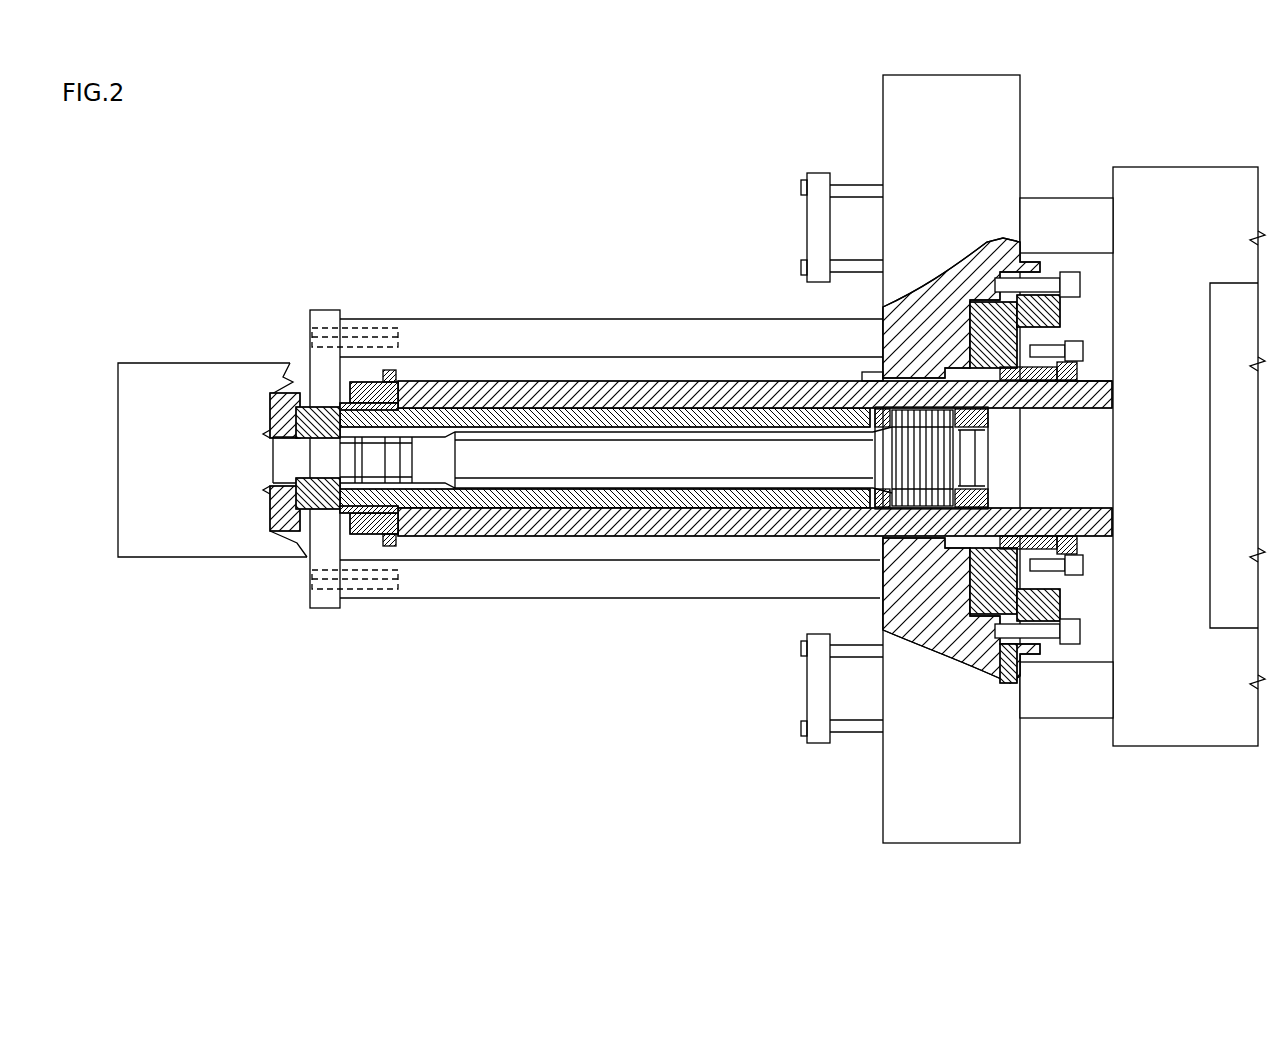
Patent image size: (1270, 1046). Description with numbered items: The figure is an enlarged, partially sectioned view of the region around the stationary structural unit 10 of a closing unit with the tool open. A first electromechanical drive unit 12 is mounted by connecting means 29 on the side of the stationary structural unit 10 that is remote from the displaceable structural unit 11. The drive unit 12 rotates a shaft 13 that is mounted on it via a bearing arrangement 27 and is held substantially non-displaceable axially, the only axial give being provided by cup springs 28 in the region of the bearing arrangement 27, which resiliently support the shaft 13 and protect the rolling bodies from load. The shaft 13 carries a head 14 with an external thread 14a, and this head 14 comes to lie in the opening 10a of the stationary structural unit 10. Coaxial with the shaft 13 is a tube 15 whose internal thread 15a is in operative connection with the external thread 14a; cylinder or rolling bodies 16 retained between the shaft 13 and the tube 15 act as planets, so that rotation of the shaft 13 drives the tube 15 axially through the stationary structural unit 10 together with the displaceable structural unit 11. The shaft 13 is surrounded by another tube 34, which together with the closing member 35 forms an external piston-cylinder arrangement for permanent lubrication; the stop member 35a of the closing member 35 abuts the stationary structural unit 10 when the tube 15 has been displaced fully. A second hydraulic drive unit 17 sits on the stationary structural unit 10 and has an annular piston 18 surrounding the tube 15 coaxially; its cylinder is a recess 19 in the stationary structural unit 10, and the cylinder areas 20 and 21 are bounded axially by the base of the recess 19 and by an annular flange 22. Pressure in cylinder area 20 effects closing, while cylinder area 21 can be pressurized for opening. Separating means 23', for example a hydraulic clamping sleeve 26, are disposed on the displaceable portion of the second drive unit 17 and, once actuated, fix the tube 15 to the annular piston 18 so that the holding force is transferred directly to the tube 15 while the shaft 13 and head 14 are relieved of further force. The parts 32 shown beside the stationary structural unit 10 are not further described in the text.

The stationary structural unit 10 is at (965, 133).
The opening 10a is at (866, 374).
The displaceable structural unit 11 is at (1163, 188).
The first electromechanical drive unit 12 is at (213, 483).
The shaft 13 is at (665, 460).
The head 14 is at (950, 458).
The external thread 14a is at (905, 460).
The tube 15 is at (712, 396).
The internal thread 15a is at (1062, 404).
The cylinder or rolling bodies 16 is at (940, 496).
The second hydraulic drive unit 17 is at (981, 300).
The annular piston 18 is at (1062, 333).
The recess 19 is at (1000, 642).
The cylinder area 20 is at (975, 333).
The cylinder area 21 is at (1007, 290).
The annular flange 22 is at (1062, 297).
The separating means 23' is at (1124, 446).
The hydraulic clamping sleeve 26 is at (1070, 382).
The bearing arrangement 27 is at (378, 538).
The cup springs 28 is at (310, 392).
The connecting means 29 is at (505, 332).
The spacer block 32 is at (1066, 215).
The tube 34 is at (590, 416).
The closing member 35 is at (365, 384).
The stop member 35a is at (392, 372).